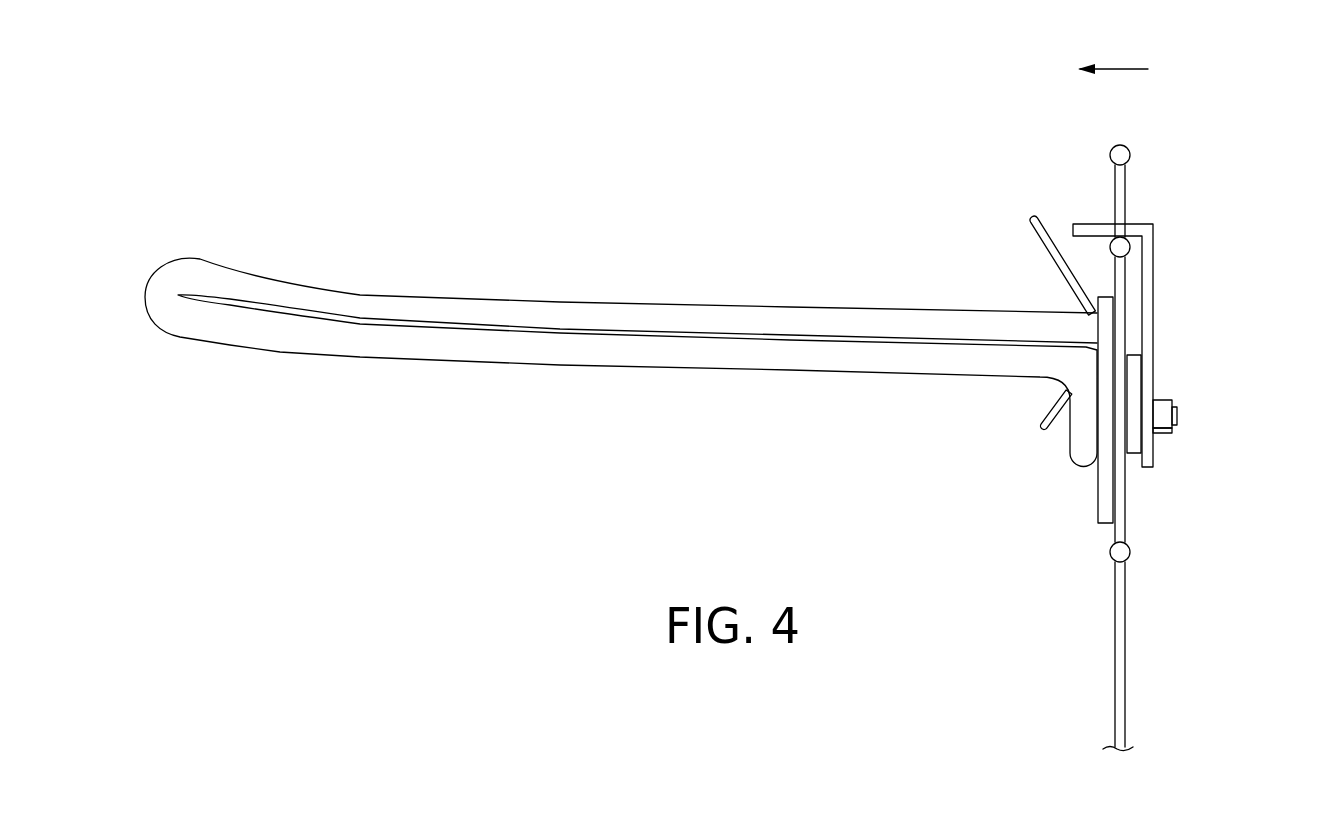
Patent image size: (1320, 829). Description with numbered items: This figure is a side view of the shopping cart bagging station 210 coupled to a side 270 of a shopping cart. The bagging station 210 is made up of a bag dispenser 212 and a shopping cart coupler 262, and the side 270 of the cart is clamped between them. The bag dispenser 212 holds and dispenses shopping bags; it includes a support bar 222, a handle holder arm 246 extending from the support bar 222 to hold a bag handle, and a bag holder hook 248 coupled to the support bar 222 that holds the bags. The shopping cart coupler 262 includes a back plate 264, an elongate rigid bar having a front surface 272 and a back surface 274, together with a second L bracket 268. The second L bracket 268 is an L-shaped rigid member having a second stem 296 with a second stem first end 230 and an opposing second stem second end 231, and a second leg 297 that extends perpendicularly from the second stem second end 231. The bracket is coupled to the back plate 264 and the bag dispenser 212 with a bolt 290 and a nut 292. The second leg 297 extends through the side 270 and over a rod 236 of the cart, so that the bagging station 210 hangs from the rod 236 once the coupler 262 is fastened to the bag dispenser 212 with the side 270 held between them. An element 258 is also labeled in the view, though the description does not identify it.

The shopping cart bagging station 210 is at (856, 250).
The bag dispenser 212 is at (884, 403).
The support bar 222 is at (1109, 510).
The second stem first end 230 is at (1152, 469).
The second stem second end 231 is at (1153, 228).
The rod 236 is at (1131, 247).
The handle holder arm 246 is at (352, 296).
The bag holder hook 248 is at (1034, 216).
The removal direction arrow 258 is at (1117, 69).
The shopping cart coupler 262 is at (1228, 326).
The back plate 264 is at (1136, 367).
The second L bracket 268 is at (1157, 203).
The side of shopping cart 270 is at (1120, 145).
The front surface 272 is at (1123, 437).
The back surface 274 is at (1142, 396).
The bolt 290 is at (1178, 415).
The nut 292 is at (1163, 434).
The second stem 296 is at (1147, 299).
The second leg 297 is at (1086, 223).